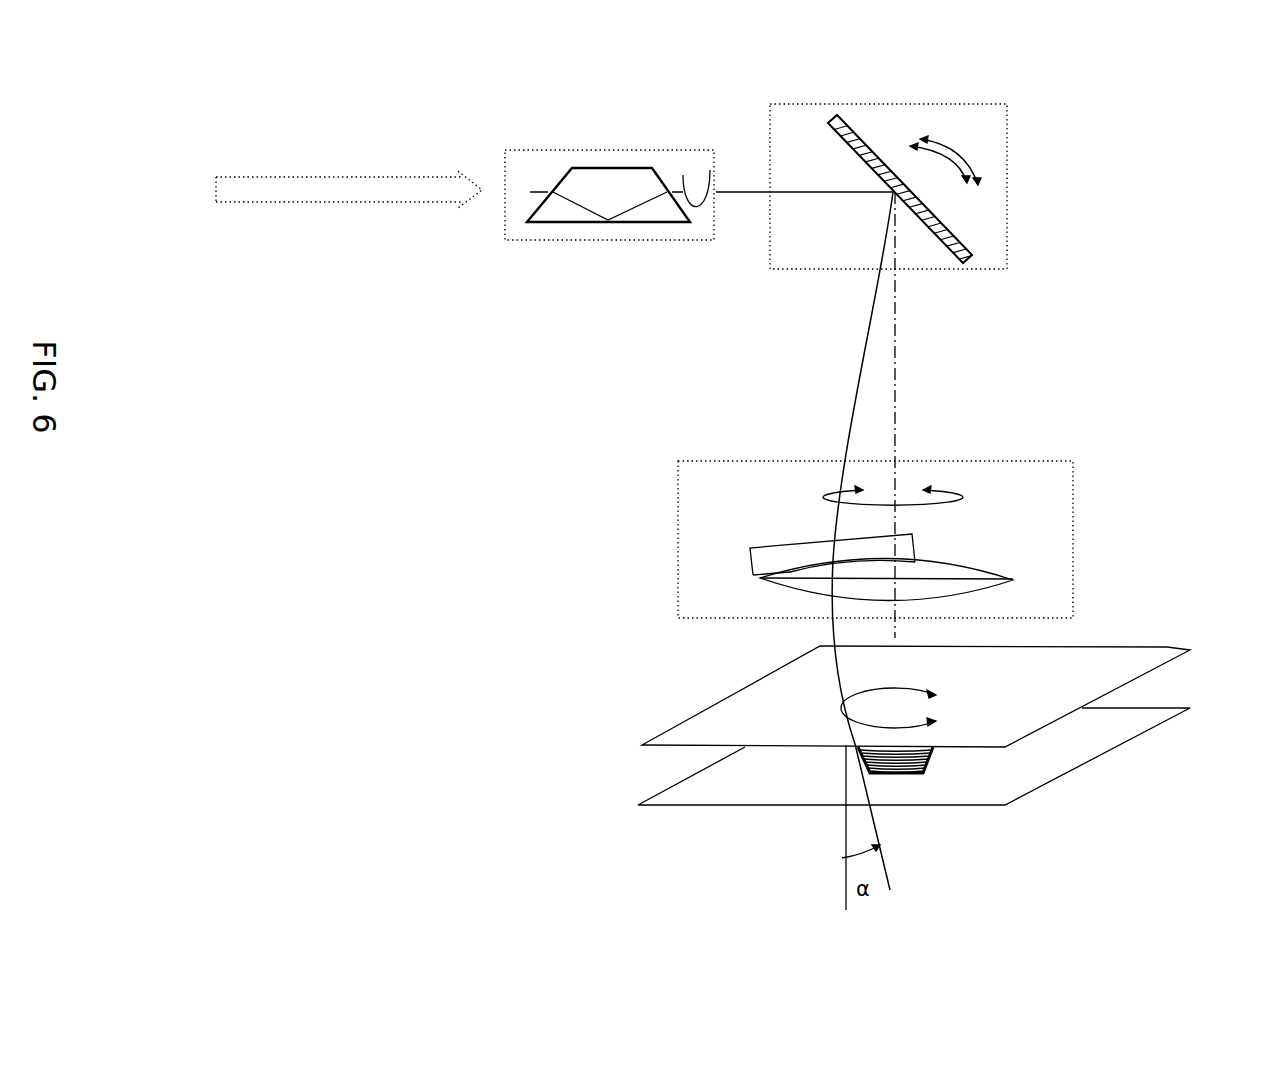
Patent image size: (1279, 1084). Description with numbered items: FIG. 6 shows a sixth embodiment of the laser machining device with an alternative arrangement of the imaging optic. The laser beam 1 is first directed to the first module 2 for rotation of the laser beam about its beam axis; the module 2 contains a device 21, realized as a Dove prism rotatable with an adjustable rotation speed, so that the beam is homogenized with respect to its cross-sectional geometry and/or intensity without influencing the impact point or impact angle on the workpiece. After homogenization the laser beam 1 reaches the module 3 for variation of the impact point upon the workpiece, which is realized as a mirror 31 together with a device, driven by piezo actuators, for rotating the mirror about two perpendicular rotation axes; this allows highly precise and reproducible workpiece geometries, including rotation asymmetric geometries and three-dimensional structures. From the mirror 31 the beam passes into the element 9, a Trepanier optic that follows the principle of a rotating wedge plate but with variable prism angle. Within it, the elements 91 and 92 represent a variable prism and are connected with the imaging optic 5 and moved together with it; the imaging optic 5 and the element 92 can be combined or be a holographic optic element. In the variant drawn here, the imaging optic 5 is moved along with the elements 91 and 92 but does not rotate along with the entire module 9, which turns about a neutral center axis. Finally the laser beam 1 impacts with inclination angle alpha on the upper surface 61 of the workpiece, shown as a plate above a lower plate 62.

The laser beam 1 is at (343, 160).
The first module 2 is at (522, 162).
The device for rotation of the laser beam 21 is at (607, 188).
The module for variation of the impact point 3 is at (783, 104).
The mirror 31 is at (874, 147).
The element with Trepanier optic 9 is at (1073, 462).
The variable prism element 91 is at (895, 548).
The variable prism element 92 is at (903, 573).
The imaging optic 5 is at (1013, 578).
The upper surface 61 is at (1167, 647).
The lower workpiece layer 62 is at (1148, 730).